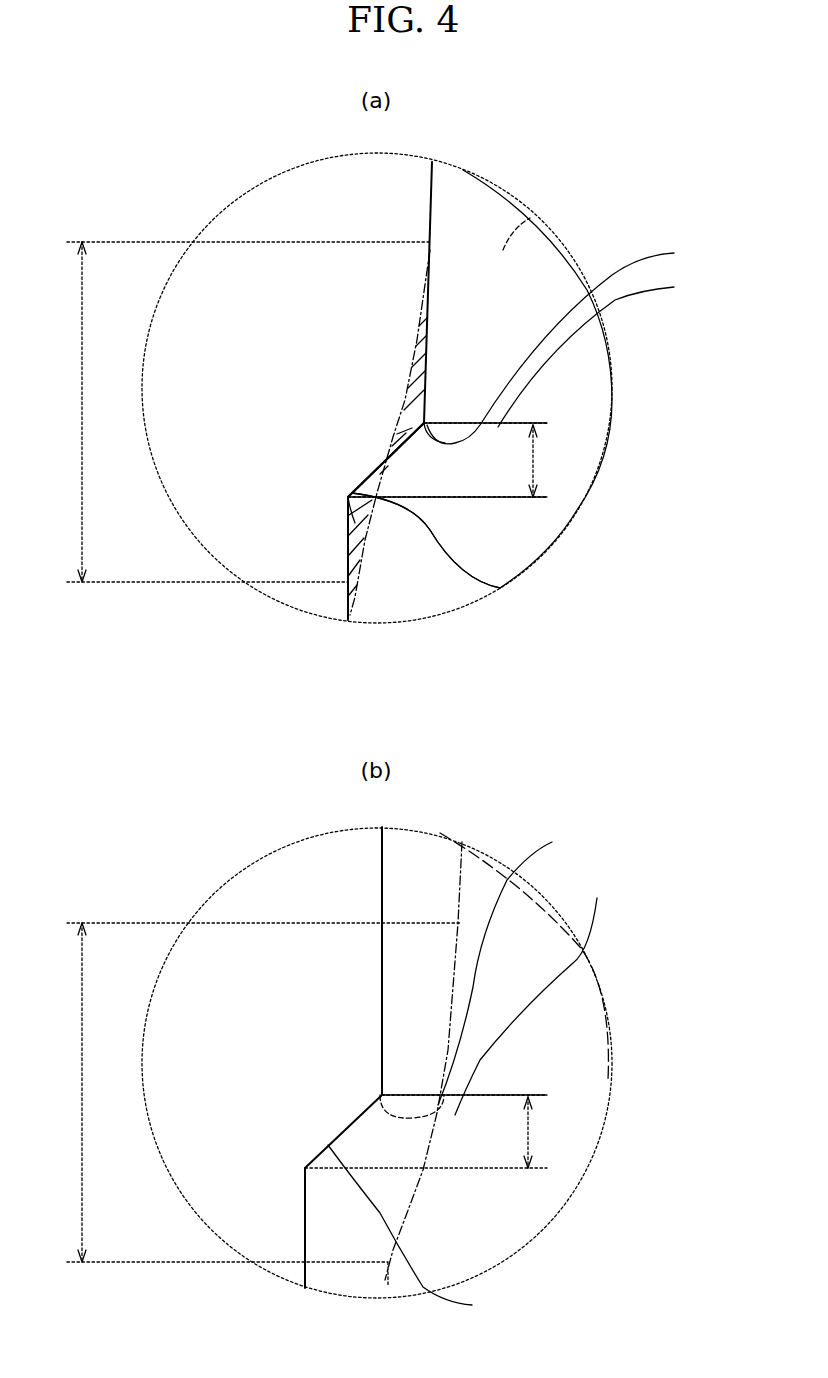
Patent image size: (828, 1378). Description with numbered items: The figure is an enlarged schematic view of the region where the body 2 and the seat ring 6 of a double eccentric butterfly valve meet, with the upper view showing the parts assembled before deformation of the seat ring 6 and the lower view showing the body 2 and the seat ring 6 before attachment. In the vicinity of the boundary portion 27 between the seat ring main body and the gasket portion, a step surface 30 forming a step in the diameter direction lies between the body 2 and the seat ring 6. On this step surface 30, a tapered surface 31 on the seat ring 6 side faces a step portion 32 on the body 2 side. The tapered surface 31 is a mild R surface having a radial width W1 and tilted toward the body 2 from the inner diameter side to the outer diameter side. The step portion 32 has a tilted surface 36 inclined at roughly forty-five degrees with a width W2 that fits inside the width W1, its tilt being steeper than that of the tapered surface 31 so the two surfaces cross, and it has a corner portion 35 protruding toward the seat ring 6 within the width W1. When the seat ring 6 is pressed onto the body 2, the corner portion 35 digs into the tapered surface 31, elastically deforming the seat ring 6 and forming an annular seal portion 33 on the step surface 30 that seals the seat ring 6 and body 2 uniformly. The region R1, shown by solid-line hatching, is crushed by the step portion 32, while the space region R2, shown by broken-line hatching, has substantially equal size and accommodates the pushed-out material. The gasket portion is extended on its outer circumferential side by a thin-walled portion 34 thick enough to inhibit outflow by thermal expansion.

The body 2 is at (265, 212).
The seat ring 6 is at (530, 218).
The boundary portion 27 is at (565, 392).
The step surface 30 is at (375, 478).
The tapered surface 31 is at (378, 458).
The step portion 32 is at (430, 495).
The seal portion 33 is at (380, 462).
The thin-walled portion 34 is at (579, 691).
The corner portion 35 is at (565, 669).
The tilted surface 36 is at (500, 588).
The region crushed by the step portion R1 is at (426, 357).
The space region R2 is at (355, 523).
The width of the tapered surface W1 is at (250, 764).
The width of the tilted surface W2 is at (441, 795).